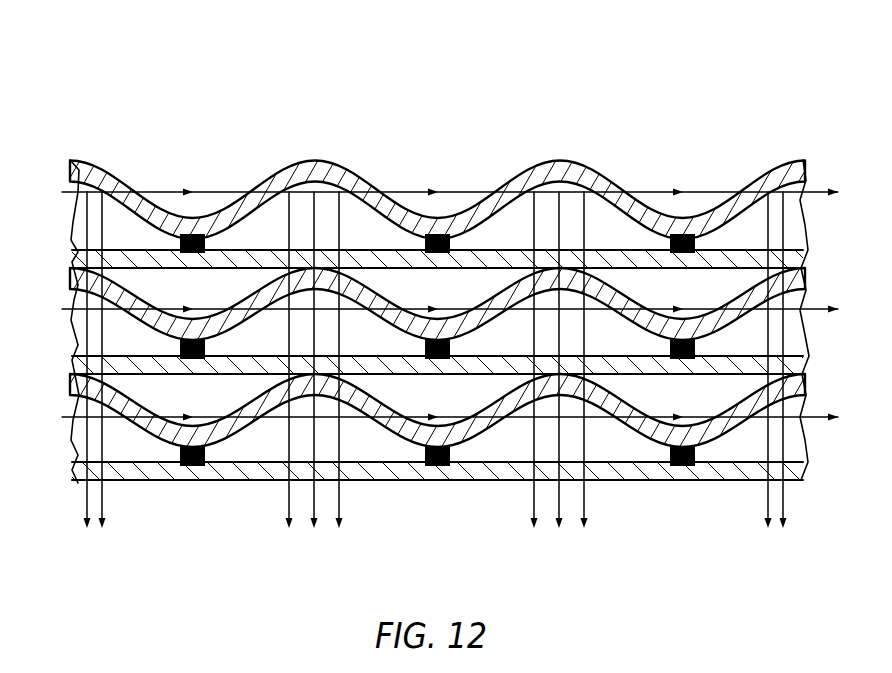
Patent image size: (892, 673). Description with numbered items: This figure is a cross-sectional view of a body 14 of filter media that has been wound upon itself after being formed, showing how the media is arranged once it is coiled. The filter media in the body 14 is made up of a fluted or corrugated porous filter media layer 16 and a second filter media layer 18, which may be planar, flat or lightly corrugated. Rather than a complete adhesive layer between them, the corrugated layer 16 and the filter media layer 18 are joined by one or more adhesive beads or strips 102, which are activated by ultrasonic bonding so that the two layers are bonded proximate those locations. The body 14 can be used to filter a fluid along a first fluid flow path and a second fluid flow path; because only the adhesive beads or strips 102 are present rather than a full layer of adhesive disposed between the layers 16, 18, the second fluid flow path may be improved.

The coiled body of filter media 14 is at (120, 78).
The corrugated porous filter media layer 16 is at (78, 174).
The filter media layer 18 is at (76, 254).
The adhesive beads or strips 102 is at (181, 245).